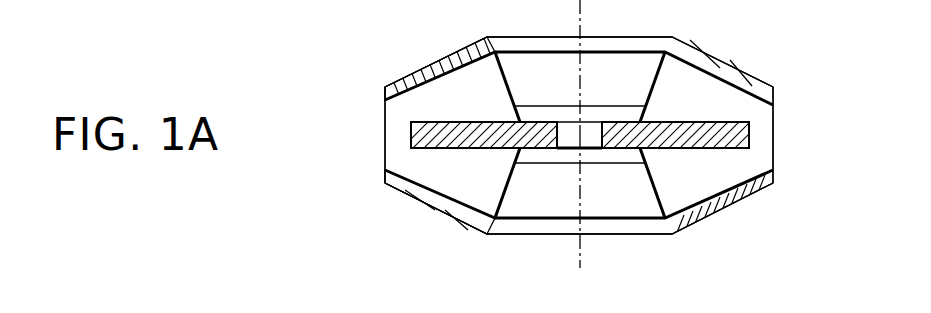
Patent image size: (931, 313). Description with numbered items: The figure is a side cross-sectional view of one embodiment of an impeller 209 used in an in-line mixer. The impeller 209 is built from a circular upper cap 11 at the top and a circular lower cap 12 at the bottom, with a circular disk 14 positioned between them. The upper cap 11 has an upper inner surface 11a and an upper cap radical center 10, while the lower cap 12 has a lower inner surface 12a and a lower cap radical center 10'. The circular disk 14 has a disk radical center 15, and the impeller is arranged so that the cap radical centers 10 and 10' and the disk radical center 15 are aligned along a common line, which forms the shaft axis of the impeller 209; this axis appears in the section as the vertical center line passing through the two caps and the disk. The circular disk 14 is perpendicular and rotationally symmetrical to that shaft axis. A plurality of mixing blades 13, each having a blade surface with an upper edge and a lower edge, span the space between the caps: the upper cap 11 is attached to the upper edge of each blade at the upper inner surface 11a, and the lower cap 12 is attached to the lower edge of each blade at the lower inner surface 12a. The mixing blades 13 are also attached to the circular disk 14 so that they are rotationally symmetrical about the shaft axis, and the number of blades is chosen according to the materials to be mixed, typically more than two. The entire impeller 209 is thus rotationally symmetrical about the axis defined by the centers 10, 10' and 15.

The impeller 209 is at (398, 41).
The upper cap radical center 10 is at (603, 67).
The lower cap radical center 10' is at (608, 202).
The circular upper cap 11 is at (727, 62).
The upper inner surface 11a is at (413, 90).
The circular lower cap 12 is at (757, 198).
The lower inner surface 12a is at (413, 172).
The mixing blades 13 is at (738, 105).
The circular disk 14 is at (748, 133).
The disk radical center 15 is at (580, 131).